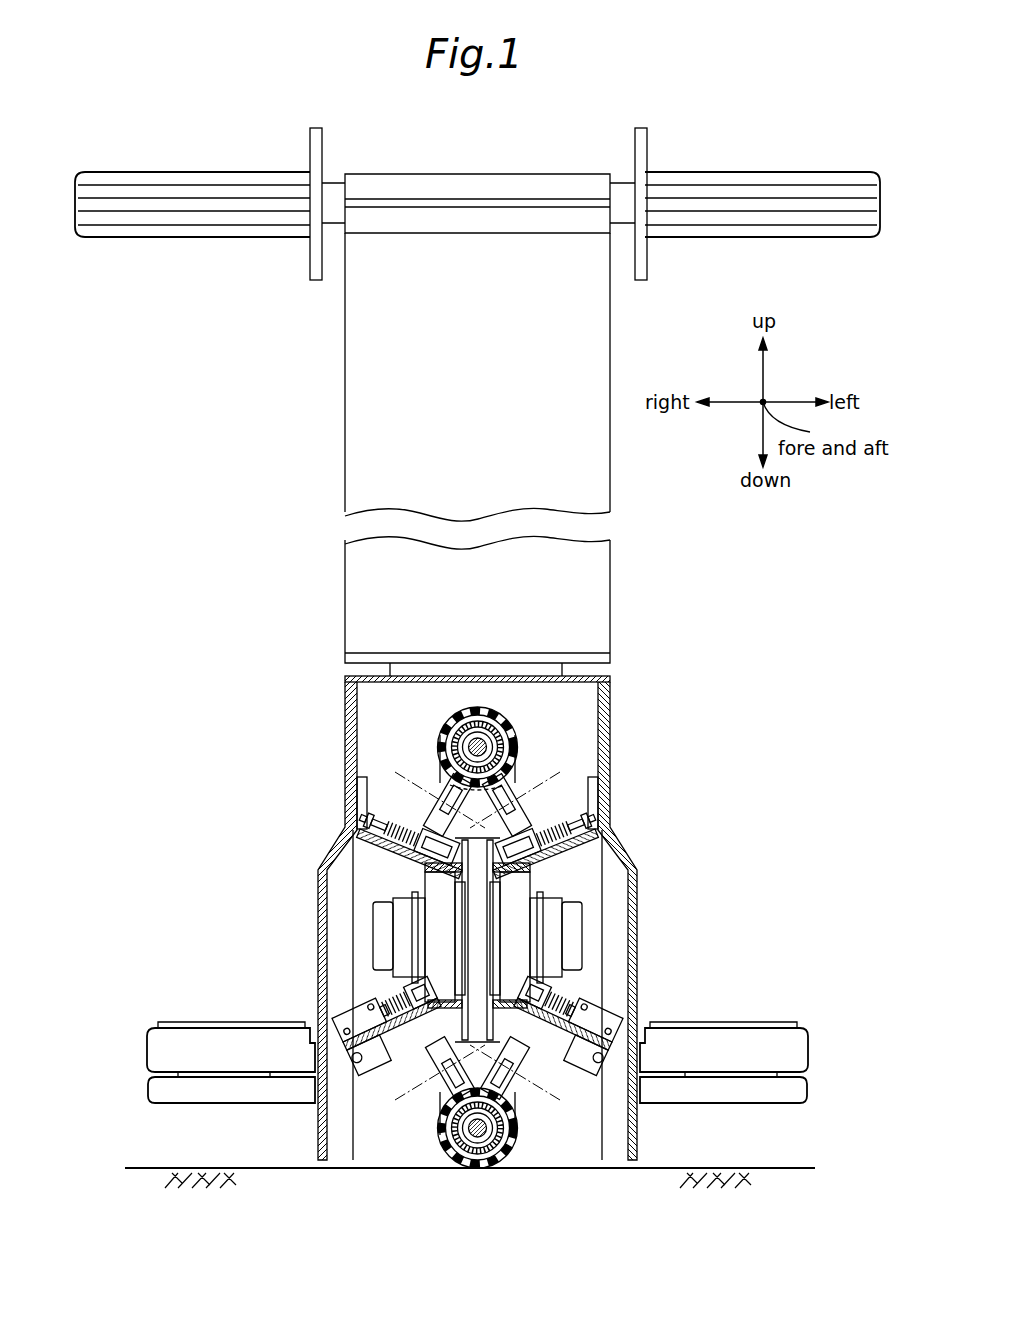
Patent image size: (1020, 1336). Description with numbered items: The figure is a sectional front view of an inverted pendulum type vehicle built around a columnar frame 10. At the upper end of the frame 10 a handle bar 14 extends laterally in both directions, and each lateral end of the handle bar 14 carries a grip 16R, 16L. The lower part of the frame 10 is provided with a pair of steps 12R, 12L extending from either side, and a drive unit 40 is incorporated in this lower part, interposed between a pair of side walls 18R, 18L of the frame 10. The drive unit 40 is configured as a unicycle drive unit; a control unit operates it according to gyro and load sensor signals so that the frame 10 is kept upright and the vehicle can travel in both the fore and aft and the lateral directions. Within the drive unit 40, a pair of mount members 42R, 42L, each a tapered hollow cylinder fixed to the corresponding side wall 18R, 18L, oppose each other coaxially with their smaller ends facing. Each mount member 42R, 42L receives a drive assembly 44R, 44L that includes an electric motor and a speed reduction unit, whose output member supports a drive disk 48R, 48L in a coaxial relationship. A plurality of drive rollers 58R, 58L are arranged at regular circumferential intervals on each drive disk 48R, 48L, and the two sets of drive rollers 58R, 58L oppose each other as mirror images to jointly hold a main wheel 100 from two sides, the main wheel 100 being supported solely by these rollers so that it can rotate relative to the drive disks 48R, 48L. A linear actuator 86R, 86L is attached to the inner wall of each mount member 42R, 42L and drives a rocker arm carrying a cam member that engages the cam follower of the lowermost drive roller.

The columnar frame 10 is at (583, 640).
The handle bar 14 is at (587, 190).
The grip 16R is at (205, 185).
The grip 16L is at (740, 185).
The side wall 18R is at (323, 910).
The side wall 18L is at (635, 910).
The drive unit 40 is at (558, 797).
The mount member 42R is at (372, 846).
The mount member 42L is at (585, 846).
The drive assembly 44R is at (366, 937).
The drive assembly 44L is at (589, 937).
The drive disk 48R is at (467, 920).
The drive disk 48L is at (490, 920).
The linear actuator 86R is at (365, 1000).
The linear actuator 86L is at (590, 1000).
The drive roller 58R is at (437, 1090).
The drive roller 58L is at (518, 1090).
The main wheel 100 is at (514, 1152).
The step 12R is at (193, 1035).
The step 12L is at (762, 1035).